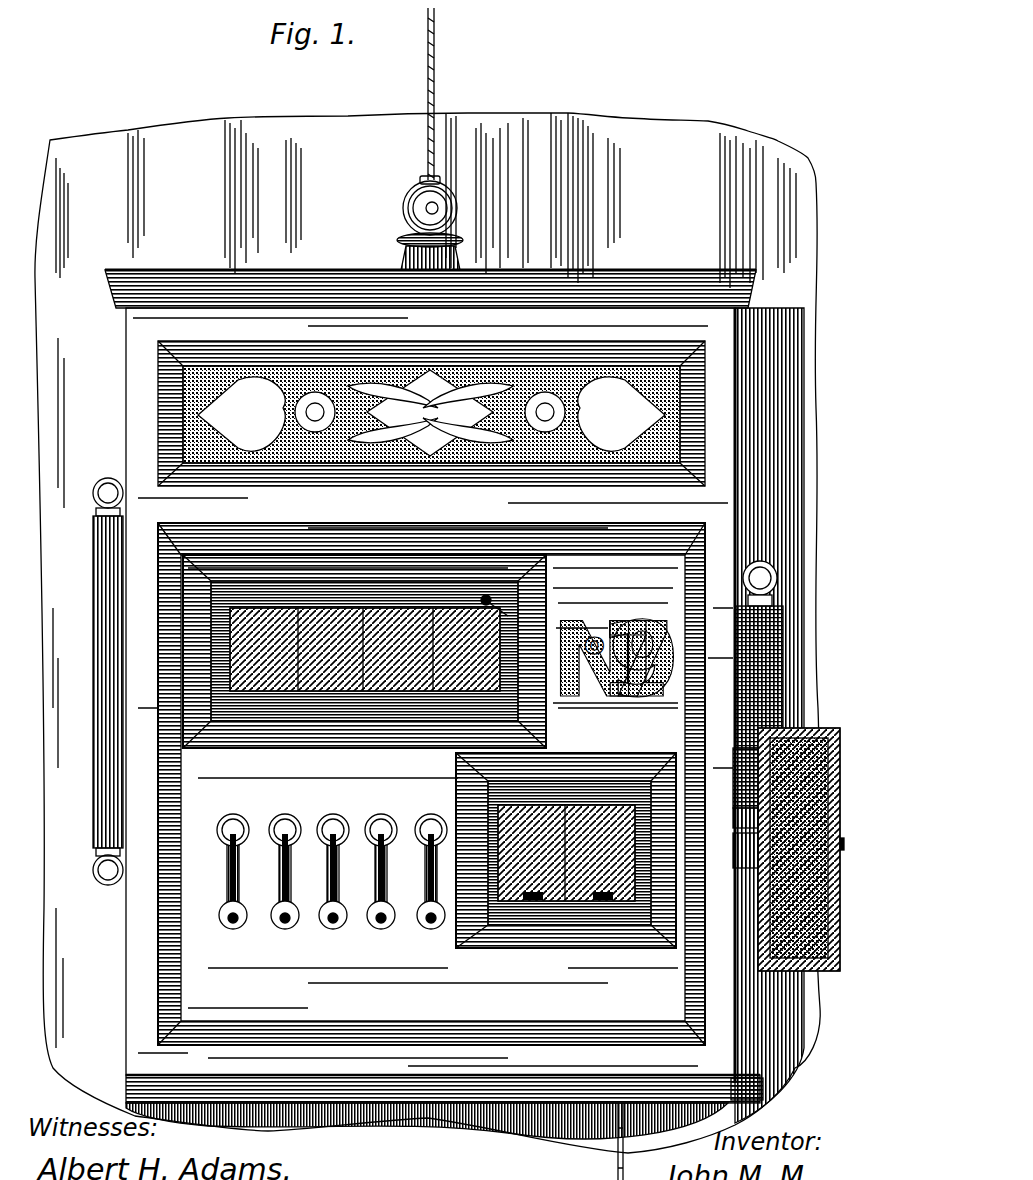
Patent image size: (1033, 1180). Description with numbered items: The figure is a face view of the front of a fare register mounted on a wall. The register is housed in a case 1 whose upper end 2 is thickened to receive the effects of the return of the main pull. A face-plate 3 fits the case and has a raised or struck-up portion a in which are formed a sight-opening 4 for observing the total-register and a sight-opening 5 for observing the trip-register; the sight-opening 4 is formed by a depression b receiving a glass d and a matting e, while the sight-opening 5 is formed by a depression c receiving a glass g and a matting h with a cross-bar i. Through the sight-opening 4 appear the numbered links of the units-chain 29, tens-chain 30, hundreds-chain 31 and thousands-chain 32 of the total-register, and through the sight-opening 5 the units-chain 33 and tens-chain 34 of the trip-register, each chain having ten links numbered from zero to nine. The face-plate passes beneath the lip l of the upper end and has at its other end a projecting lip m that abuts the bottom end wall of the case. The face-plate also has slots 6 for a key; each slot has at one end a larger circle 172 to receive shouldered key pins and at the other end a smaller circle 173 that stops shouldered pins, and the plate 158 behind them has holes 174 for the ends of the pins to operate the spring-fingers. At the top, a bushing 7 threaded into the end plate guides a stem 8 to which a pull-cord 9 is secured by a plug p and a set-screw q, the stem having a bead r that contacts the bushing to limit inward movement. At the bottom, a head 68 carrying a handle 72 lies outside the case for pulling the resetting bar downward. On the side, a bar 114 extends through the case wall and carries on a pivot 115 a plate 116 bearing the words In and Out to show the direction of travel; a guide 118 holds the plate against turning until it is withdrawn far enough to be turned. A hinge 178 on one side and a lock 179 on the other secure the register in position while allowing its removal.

The case 1 is at (417, 691).
The end of case 2 is at (283, 266).
The face-plate 3 is at (431, 428).
The sight-opening 4 is at (215, 580).
The sight-opening 5 is at (612, 960).
The slots 6 is at (229, 870).
The bushing 7 is at (432, 258).
The stem 8 is at (420, 202).
The pull-cord 9 is at (444, 94).
The units-chain 29 is at (457, 656).
The tens-chain 30 is at (385, 653).
The hundreds-chain 31 is at (345, 653).
The thousands-chain 32 is at (275, 653).
The units-chain 33 is at (618, 815).
The tens-chain 34 is at (568, 885).
The head 68 is at (642, 1141).
The handle 72 is at (755, 1090).
The bar 114 is at (722, 862).
The pivot or pin 115 is at (726, 832).
The plate 116 is at (760, 800).
The guide 118 is at (733, 752).
The plate 158 is at (222, 856).
The circle 172 is at (240, 802).
The circle 173 is at (276, 915).
The holes 174 is at (224, 914).
The hinge 178 is at (86, 572).
The lock 179 is at (770, 654).
The raised or struck-up portion a is at (431, 784).
The depression b is at (530, 651).
The depression c is at (676, 822).
The glass d is at (454, 616).
The matting e is at (493, 604).
The glass g is at (546, 853).
The matting h is at (575, 790).
The cross-bar i is at (564, 853).
The lip l is at (747, 684).
The projecting portion or lip m is at (120, 1080).
The plug p is at (412, 172).
The set-screw q is at (407, 196).
The bead r is at (395, 234).